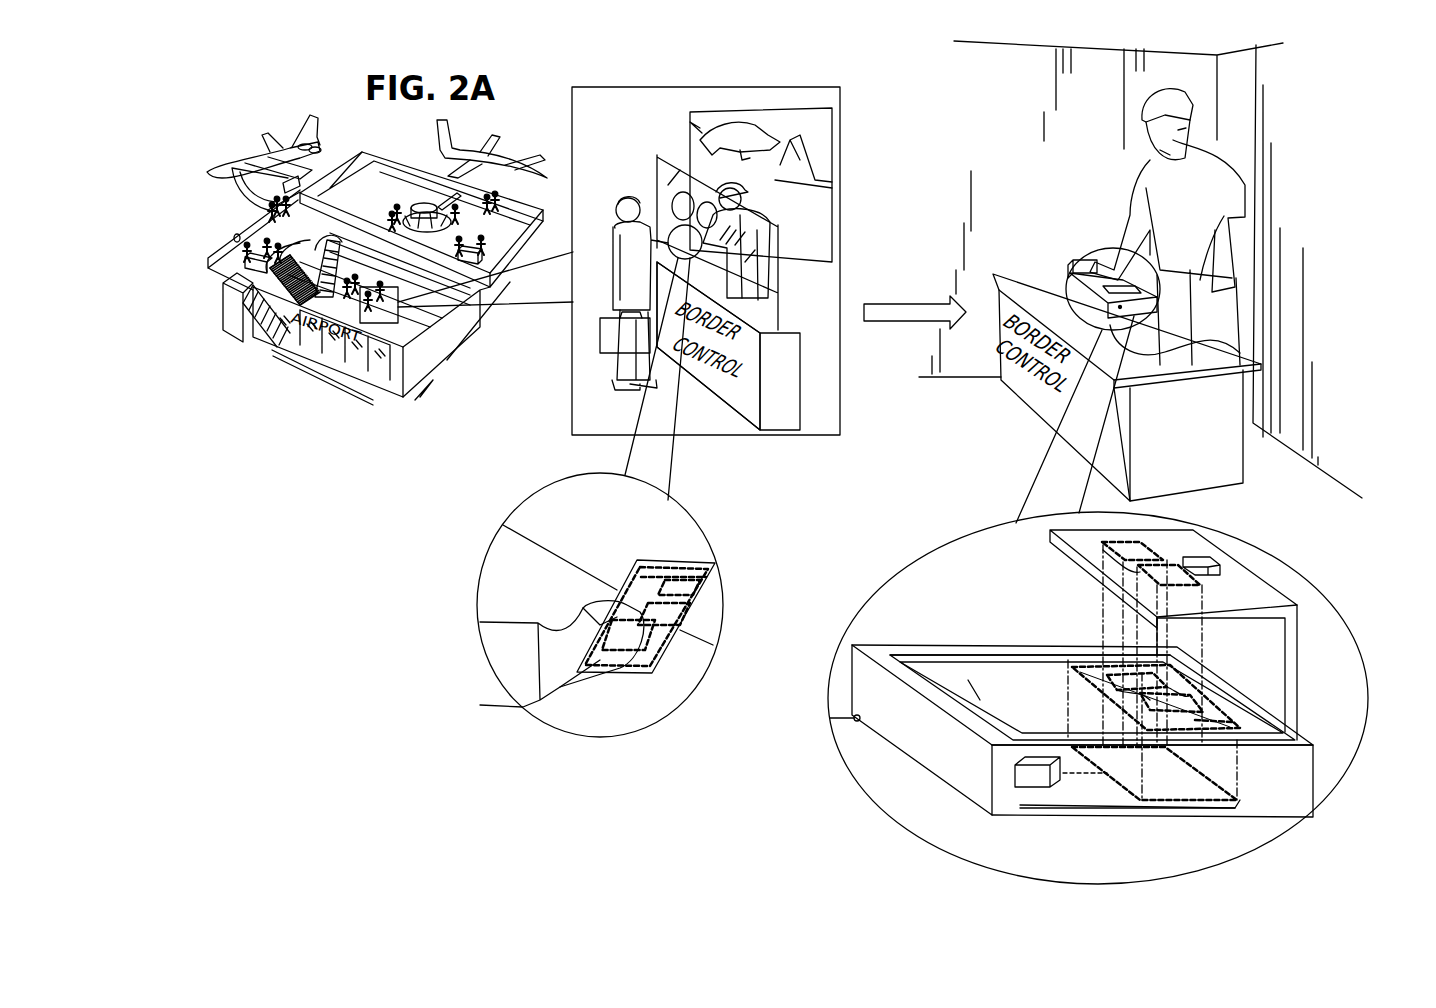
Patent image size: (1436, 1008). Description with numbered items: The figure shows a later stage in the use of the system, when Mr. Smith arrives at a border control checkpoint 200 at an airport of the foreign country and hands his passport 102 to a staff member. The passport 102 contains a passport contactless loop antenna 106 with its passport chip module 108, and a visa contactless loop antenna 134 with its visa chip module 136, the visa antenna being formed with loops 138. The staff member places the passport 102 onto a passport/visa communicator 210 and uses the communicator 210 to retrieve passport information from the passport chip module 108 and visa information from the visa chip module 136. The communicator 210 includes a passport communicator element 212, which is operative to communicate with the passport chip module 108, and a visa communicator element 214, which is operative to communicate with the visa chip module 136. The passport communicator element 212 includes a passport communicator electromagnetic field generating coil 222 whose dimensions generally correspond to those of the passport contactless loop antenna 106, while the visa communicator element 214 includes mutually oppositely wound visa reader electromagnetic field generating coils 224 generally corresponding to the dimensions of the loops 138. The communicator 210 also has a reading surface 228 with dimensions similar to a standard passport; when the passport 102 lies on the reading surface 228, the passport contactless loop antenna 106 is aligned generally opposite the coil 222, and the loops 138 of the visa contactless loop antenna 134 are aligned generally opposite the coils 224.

The passport 102 is at (898, 463).
The passport contactless loop antenna 106 is at (692, 560).
The passport chip module 108 is at (1232, 722).
The visa contactless loop antenna 134 is at (690, 625).
The visa chip module 136 is at (1140, 693).
The loops 138 is at (1090, 673).
The border control checkpoint 200 is at (728, 392).
The passport/visa communicator 210 is at (1068, 255).
The passport communicator element 212 is at (1138, 812).
The visa communicator element 214 is at (1250, 600).
The passport communicator electromagnetic field generating coil 222 is at (1115, 782).
The visa reader electromagnetic field generating coils 224 is at (1140, 572).
The reading surface 228 is at (907, 657).